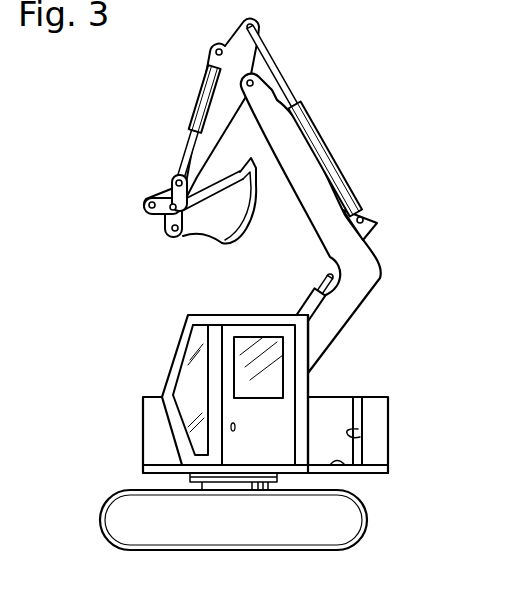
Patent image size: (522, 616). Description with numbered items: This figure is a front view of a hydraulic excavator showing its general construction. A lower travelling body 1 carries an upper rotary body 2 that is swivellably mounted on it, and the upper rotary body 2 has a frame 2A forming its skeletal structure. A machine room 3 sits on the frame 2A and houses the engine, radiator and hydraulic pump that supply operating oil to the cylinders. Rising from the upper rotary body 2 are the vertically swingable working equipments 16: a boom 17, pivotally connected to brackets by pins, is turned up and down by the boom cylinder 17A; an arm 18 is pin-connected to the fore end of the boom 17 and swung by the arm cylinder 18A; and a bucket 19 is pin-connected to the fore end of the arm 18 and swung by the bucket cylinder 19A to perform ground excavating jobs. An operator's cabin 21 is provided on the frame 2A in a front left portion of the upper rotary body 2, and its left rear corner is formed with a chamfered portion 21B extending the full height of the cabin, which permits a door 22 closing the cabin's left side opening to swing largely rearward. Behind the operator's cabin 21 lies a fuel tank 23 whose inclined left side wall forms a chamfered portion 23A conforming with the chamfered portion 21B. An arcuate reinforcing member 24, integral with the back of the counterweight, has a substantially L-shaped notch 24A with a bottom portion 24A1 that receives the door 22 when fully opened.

The lower travelling body 1 is at (350, 525).
The upper rotary body 2 is at (147, 390).
The frame 2A is at (150, 470).
The machine room 3 is at (155, 427).
The working equipments 16 is at (314, 93).
The boom 17 is at (368, 265).
The boom cylinder 17A is at (313, 300).
The arm 18 is at (222, 107).
The arm cylinder 18A is at (328, 157).
The bucket 19 is at (217, 232).
The bucket cylinder 19A is at (183, 130).
The operator's cabin 21 is at (185, 335).
The chamfered portion 21B is at (303, 347).
The door 22 is at (283, 455).
The fuel tank 23 is at (343, 400).
The chamfered portion 23A is at (318, 410).
The reinforcing member 24 is at (380, 417).
The notch 24A is at (347, 430).
The bottom portion 24A1 is at (343, 467).